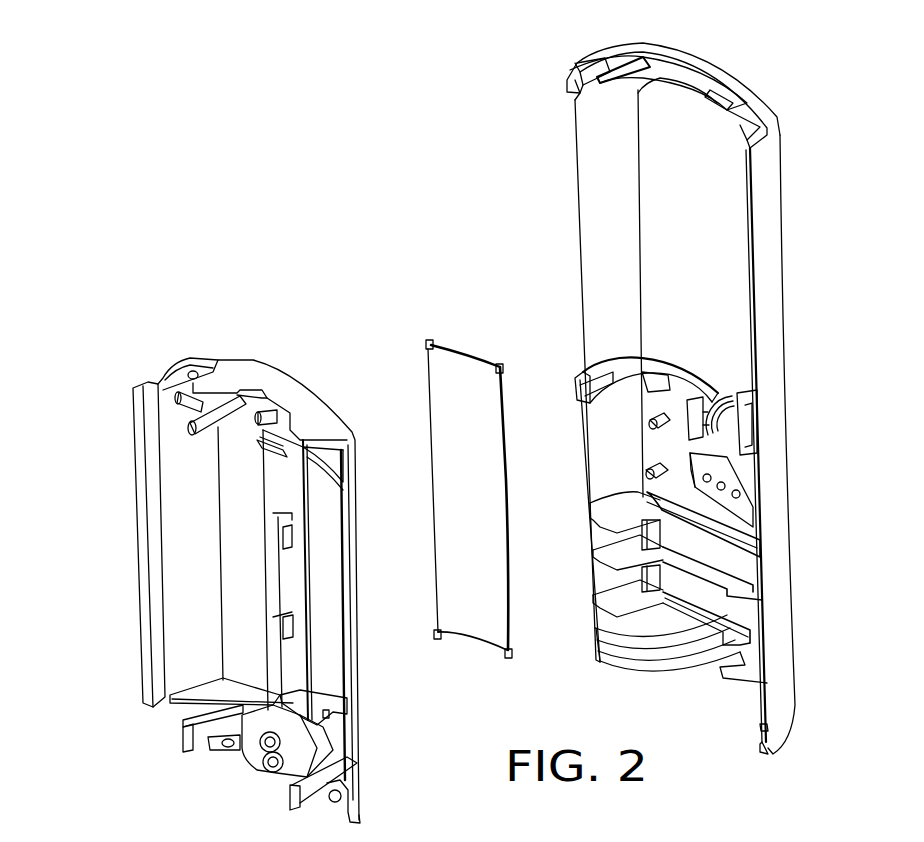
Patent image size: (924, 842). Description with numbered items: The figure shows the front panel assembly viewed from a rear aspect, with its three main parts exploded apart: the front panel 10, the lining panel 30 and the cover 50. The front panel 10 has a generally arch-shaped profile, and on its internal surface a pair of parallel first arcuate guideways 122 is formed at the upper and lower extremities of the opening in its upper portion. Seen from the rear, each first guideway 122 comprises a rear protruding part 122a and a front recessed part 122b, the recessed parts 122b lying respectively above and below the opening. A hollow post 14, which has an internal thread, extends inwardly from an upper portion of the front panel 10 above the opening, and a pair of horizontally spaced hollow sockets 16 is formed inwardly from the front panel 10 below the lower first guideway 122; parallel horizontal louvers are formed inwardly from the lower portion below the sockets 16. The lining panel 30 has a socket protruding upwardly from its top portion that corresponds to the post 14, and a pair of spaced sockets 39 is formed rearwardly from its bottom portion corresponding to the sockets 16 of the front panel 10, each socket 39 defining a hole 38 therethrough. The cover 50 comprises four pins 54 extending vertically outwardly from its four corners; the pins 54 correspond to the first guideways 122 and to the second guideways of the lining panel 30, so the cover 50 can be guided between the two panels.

The front panel 10 is at (803, 213).
The hollow post 14 is at (573, 100).
The hollow sockets 16 is at (650, 427).
The lining panel 30 is at (147, 367).
The hole 38 is at (337, 793).
The sockets 39 is at (341, 797).
The cover 50 is at (430, 330).
The pins 54 is at (426, 343).
The first arcuate guideways 122 is at (705, 373).
The rear protruding part 122a is at (583, 372).
The front recessed part 122b is at (680, 362).